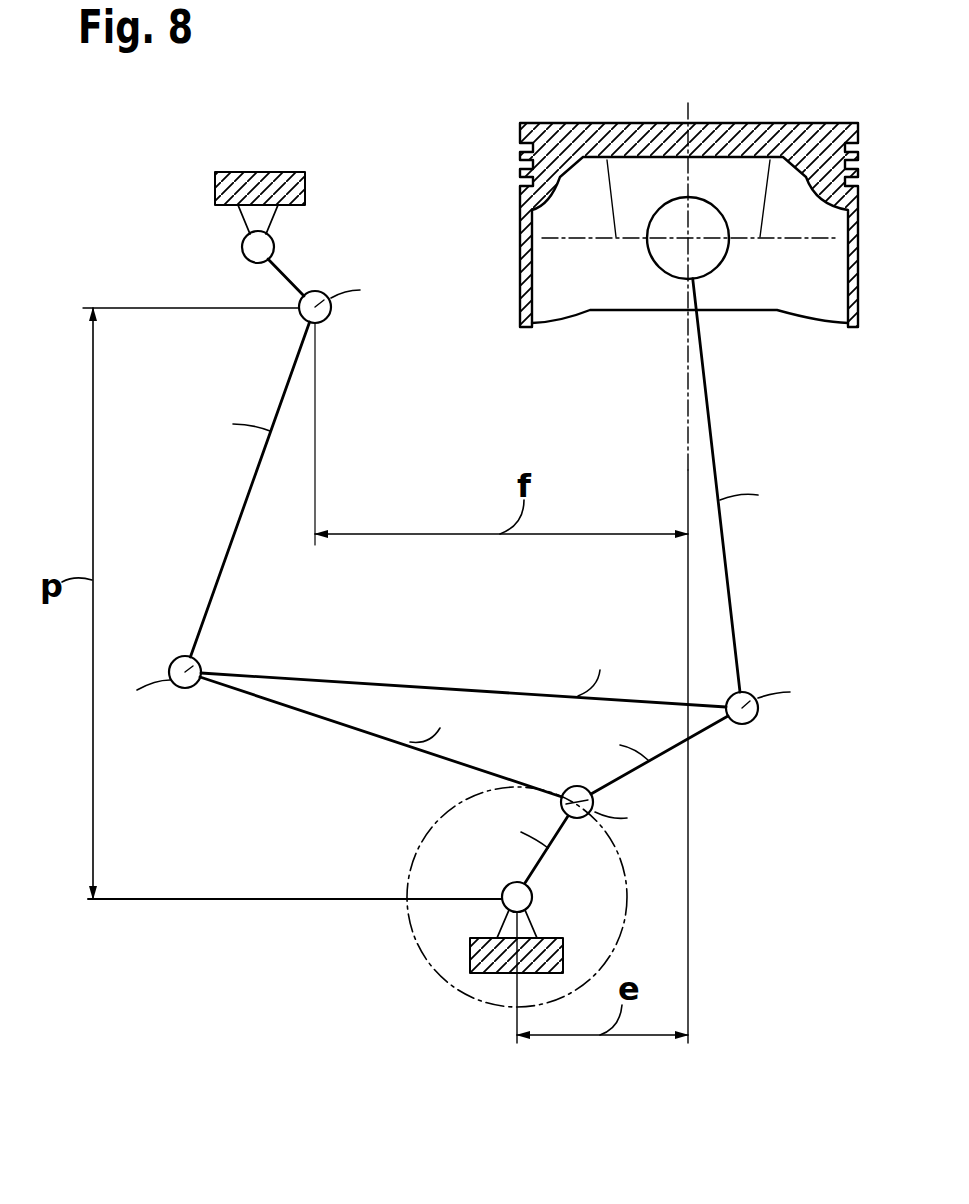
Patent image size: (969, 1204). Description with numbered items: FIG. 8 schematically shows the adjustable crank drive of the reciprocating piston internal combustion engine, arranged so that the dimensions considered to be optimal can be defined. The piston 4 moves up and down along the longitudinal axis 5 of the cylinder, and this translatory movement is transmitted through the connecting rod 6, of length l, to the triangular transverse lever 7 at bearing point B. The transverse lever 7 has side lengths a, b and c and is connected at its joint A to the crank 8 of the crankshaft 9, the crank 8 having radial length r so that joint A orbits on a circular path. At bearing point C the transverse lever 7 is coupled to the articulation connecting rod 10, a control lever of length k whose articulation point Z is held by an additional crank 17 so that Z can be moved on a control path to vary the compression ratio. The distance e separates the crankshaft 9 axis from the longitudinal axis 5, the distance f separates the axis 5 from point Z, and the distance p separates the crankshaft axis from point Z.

The piston 4 is at (612, 130).
The longitudinal axis 5 is at (688, 448).
The connecting rod 6 is at (710, 420).
The triangular transverse lever 7 is at (328, 681).
The crank 8 is at (553, 840).
The crankshaft 9 is at (422, 962).
The articulation connecting rod 10 is at (241, 520).
The additional crank 17 is at (283, 262).